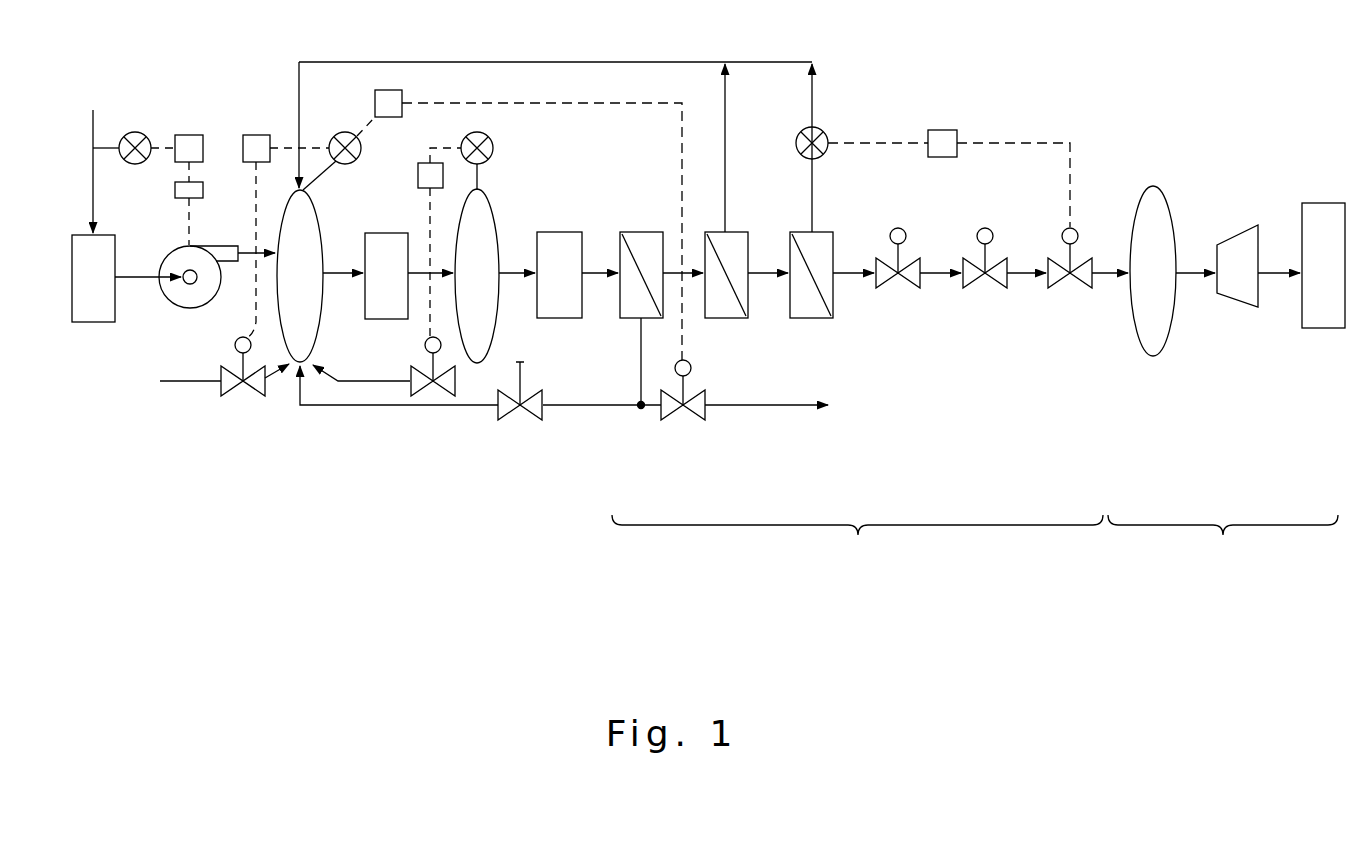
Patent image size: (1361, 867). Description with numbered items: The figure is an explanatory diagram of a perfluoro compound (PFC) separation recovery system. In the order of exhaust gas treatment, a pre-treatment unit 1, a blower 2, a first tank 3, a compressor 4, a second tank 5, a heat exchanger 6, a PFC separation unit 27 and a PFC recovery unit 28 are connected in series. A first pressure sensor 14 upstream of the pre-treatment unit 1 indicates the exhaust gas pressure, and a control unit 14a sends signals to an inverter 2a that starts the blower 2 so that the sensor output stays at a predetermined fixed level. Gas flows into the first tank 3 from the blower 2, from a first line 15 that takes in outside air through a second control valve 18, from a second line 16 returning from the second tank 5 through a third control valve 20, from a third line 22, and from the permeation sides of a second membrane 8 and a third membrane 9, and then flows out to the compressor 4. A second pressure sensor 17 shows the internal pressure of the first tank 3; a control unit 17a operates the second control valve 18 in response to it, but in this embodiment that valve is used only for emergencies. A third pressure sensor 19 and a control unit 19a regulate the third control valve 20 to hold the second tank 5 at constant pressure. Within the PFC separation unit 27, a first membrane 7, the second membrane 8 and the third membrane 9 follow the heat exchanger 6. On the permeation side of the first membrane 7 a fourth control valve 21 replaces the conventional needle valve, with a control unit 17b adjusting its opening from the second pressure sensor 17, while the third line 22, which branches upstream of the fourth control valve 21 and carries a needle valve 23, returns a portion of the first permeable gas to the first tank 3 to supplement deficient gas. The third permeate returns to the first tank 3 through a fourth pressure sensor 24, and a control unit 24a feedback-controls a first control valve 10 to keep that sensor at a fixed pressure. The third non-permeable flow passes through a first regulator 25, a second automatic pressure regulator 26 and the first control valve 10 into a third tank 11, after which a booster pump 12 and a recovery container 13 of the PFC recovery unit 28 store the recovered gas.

The pre-treatment unit 1 is at (88, 322).
The blower 2 is at (165, 303).
The inverter 2a is at (175, 193).
The first tank 3 is at (318, 206).
The compressor 4 is at (380, 233).
The second tank 5 is at (492, 205).
The heat exchanger 6 is at (565, 232).
The first membrane 7 is at (640, 232).
The second membrane 8 is at (735, 232).
The third membrane 9 is at (825, 232).
The first control valve 10 is at (1075, 288).
The third tank 11 is at (1153, 357).
The booster pump 12 is at (1245, 307).
The recovery container 13 is at (1328, 330).
The first pressure sensor 14 is at (134, 132).
The control unit 14a is at (189, 135).
The first line 15 is at (180, 384).
The second line 16 is at (350, 386).
The second pressure sensor 17 is at (344, 132).
The control unit 17a is at (256, 135).
The control unit 17b is at (388, 90).
The second control valve 18 is at (253, 396).
The third pressure sensor 19 is at (494, 148).
The control unit 19a is at (418, 174).
The third control valve 20 is at (410, 392).
The fourth control valve 21 is at (690, 420).
The third line 22 is at (445, 408).
The needle valve 23 is at (528, 420).
The fourth pressure sensor 24 is at (826, 132).
The control unit 24a is at (945, 128).
The first regulator 25 is at (905, 288).
The second automatic pressure regulator 26 is at (990, 288).
The PFC separation unit 27 is at (857, 548).
The PFC recovery unit 28 is at (1223, 548).